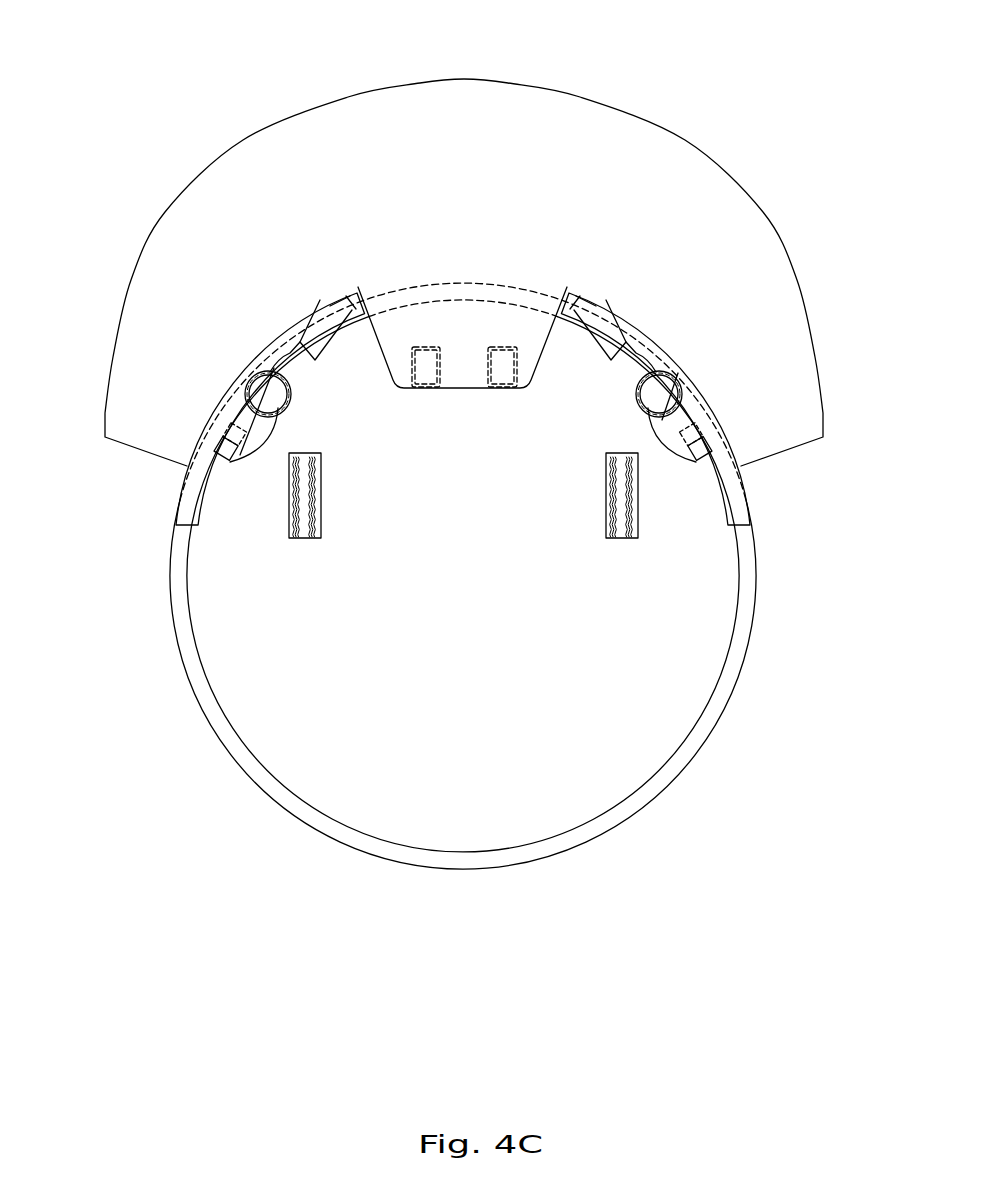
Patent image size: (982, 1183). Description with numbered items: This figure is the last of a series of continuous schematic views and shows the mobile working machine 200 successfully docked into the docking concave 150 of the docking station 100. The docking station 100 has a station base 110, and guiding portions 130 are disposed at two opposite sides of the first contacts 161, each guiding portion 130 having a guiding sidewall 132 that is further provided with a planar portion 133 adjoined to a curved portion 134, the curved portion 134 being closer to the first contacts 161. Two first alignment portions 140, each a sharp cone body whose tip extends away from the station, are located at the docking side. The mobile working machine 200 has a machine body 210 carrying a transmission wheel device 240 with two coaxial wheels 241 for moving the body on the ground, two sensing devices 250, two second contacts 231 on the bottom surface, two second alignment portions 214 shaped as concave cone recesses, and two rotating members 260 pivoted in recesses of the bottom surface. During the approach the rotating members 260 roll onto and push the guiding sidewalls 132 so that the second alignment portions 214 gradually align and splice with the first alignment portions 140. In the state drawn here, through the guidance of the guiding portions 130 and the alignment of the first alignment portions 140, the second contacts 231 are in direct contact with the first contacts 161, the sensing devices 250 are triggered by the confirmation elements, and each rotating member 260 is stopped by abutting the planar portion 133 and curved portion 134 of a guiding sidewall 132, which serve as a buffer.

The docking station 100 is at (200, 68).
The station base 110 is at (652, 133).
The guiding portion 130 is at (180, 473).
The guiding sidewall 132 is at (246, 421).
The planar portion 133 is at (249, 409).
The curved portion 134 is at (264, 372).
The first alignment portion 140 is at (302, 340).
The docking concave 150 is at (340, 284).
The first contact 161 is at (503, 343).
The mobile working machine 200 is at (473, 900).
The machine body 210 is at (712, 720).
The second alignment portion 214 is at (327, 303).
The second contact 231 is at (502, 357).
The transmission wheel device 240 is at (344, 573).
The wheel 241 is at (318, 538).
The sensing device 250 is at (740, 460).
The rotating member 260 is at (259, 392).